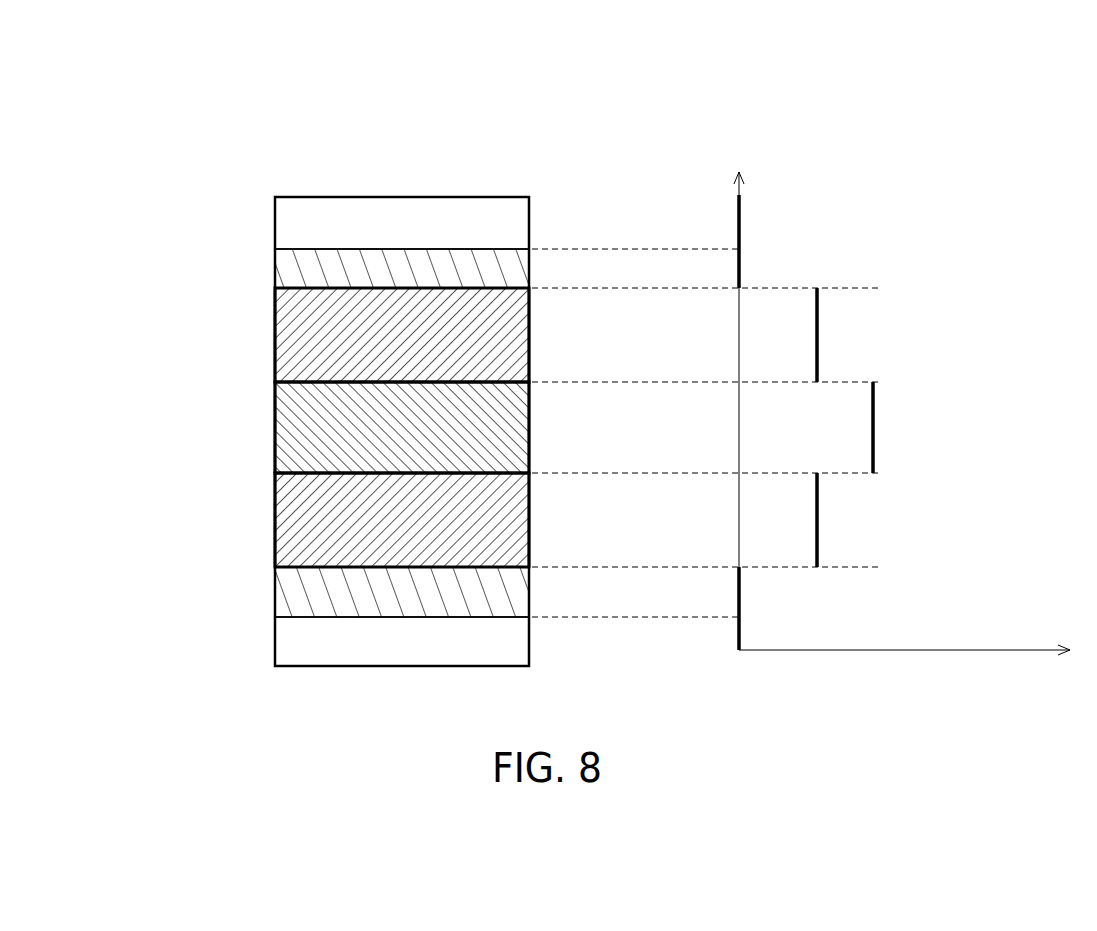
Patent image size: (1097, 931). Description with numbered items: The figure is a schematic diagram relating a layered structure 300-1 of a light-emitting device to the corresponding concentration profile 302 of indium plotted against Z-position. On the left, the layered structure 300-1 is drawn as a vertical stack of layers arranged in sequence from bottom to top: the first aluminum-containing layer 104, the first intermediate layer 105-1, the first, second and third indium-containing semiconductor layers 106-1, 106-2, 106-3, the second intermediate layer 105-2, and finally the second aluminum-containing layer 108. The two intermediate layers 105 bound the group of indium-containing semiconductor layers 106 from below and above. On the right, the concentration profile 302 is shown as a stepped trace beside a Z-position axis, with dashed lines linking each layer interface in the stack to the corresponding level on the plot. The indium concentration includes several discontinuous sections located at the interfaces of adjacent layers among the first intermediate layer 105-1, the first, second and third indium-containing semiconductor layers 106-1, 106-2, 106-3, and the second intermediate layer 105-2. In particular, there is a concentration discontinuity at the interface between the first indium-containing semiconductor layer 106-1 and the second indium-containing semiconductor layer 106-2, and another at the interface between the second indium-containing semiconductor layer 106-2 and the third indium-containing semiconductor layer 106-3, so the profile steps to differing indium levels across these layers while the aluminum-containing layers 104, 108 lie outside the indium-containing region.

The layered structure 300-1 is at (182, 66).
The concentration profile 302 is at (935, 162).
The second aluminum-containing layer 108 is at (288, 222).
The intermediate layer 105 is at (333, 433).
The second intermediate layer 105-2 is at (288, 267).
The first intermediate layer 105-1 is at (288, 582).
The indium-containing semiconductor layer 106 is at (188, 322).
The third indium-containing semiconductor layer 106-3 is at (288, 335).
The second indium-containing semiconductor layer 106-2 is at (288, 427).
The first indium-containing semiconductor layer 106-1 is at (288, 514).
The first aluminum-containing layer 104 is at (290, 644).